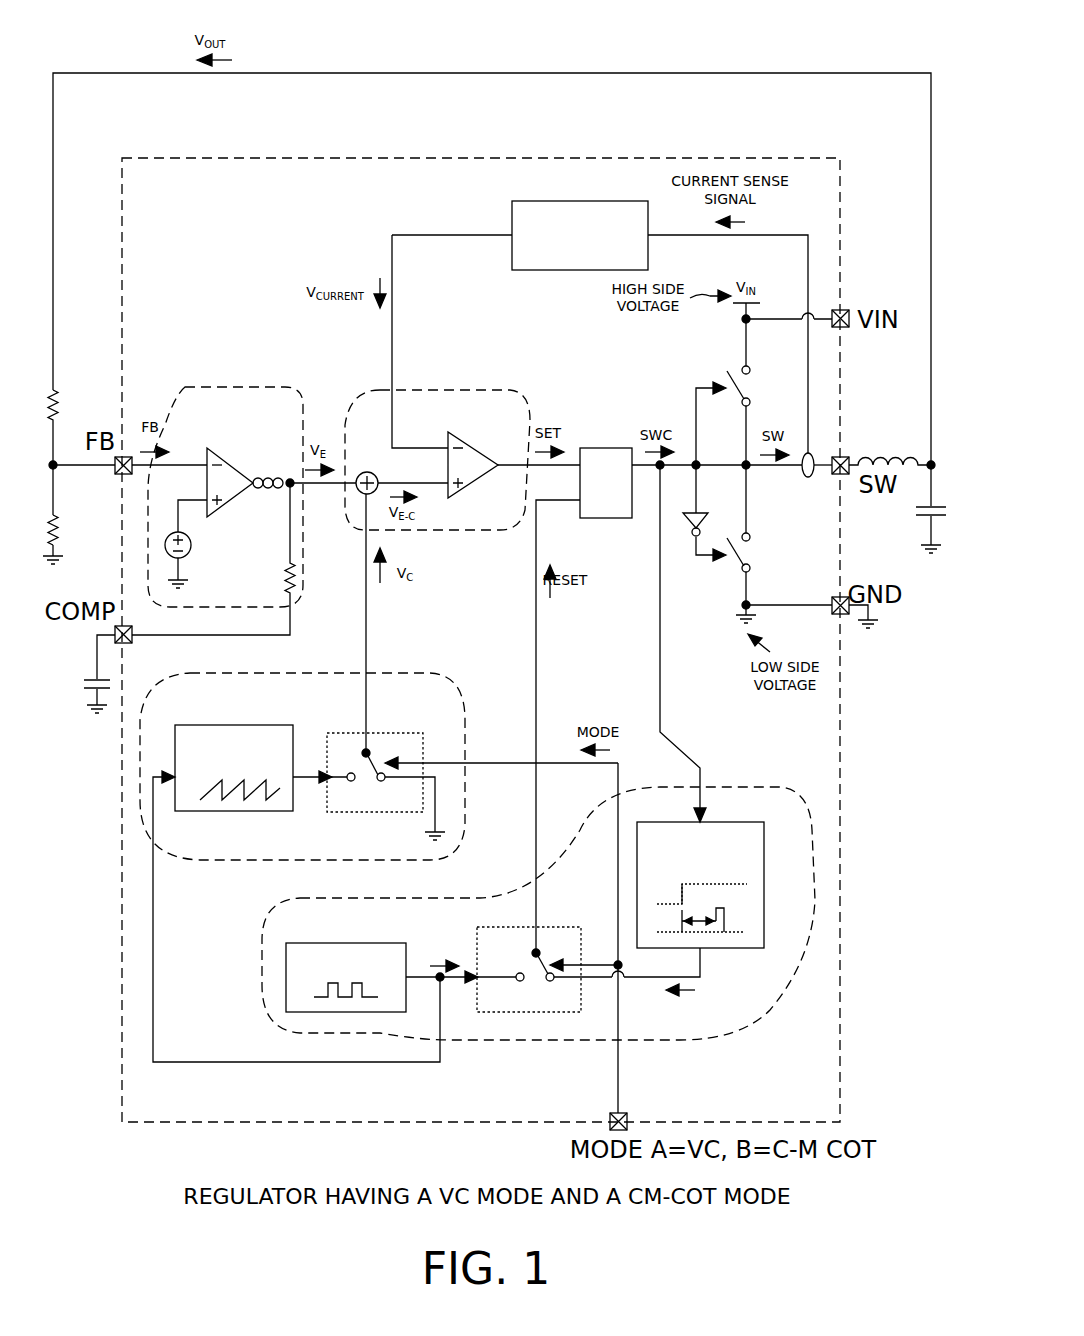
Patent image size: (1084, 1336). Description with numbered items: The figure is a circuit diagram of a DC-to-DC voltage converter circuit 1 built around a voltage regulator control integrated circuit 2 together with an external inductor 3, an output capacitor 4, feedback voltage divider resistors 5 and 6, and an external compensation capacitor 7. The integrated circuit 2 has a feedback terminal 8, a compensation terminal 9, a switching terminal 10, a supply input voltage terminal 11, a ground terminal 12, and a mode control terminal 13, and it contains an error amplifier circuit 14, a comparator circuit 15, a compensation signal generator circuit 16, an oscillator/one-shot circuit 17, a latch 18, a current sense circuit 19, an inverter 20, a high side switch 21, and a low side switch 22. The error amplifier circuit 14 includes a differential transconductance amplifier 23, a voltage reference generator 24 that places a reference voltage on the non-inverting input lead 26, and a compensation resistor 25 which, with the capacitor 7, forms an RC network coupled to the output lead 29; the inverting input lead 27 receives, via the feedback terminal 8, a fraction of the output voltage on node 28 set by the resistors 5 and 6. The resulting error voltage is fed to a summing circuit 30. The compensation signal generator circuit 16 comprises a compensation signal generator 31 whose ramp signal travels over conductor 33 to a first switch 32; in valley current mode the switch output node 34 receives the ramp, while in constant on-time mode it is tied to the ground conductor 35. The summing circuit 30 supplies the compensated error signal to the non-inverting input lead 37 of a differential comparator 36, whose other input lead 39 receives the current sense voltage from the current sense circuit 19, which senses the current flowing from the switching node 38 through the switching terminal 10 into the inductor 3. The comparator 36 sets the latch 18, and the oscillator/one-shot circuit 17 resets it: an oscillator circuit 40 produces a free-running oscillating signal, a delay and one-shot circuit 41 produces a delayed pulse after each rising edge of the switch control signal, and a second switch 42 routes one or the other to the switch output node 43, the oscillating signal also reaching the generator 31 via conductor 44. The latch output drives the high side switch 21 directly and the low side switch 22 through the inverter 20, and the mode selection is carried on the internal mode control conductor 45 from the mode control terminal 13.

The DC-to-DC voltage converter circuit 1 is at (847, 50).
The voltage regulator control integrated circuit 2 is at (438, 157).
The inductor 3 is at (884, 452).
The output capacitor 4 is at (918, 521).
The feedback voltage divider resistor 5 is at (58, 404).
The feedback voltage divider resistor 6 is at (58, 521).
The external compensation capacitor 7 is at (82, 682).
The feedback integrated circuit terminal FB 8 is at (114, 478).
The compensation integrated circuit terminal COMP 9 is at (132, 646).
The switching integrated circuit terminal SW 10 is at (834, 477).
The supply input voltage integrated circuit terminal VIN 11 is at (833, 330).
The ground integrated circuit terminal GND 12 is at (833, 618).
The mode control integrated circuit terminal MODE 13 is at (608, 1120).
The error amplifier circuit 14 is at (230, 388).
The comparator circuit 15 is at (476, 391).
The compensation signal generator circuit 16 is at (448, 681).
The oscillator/one-shot circuit 17 is at (746, 787).
The latch 18 is at (603, 447).
The current sense circuit 19 is at (578, 201).
The inverter 20 is at (706, 512).
The high side switch HSS 21 is at (757, 392).
The low side switch LSS 22 is at (756, 535).
The differential transconductance amplifier 23 is at (228, 450).
The voltage reference generator 24 is at (216, 547).
The compensation resistor RCOMP 25 is at (285, 593).
The non-inverting input lead 26 is at (200, 498).
The inverting input lead 27 is at (200, 463).
The node 28 is at (933, 462).
The output lead 29 is at (283, 478).
The summing circuit 30 is at (367, 471).
The compensation signal generator 31 is at (232, 724).
The switch SW1 32 is at (338, 732).
The conductor 33 is at (312, 775).
The switch output node 34 is at (371, 752).
The ground conductor 35 is at (432, 828).
The differential comparator 36 is at (472, 452).
The non-inverting input lead 37 is at (440, 495).
The switching node SW 38 is at (742, 468).
The input lead 39 is at (438, 448).
The oscillator circuit 40 is at (344, 942).
The delay and one-shot circuit 41 is at (740, 822).
The switch 42 is at (566, 927).
The switch output node 43 is at (532, 955).
The conductor 44 is at (230, 1061).
The internal mode control conductor 45 is at (620, 1093).